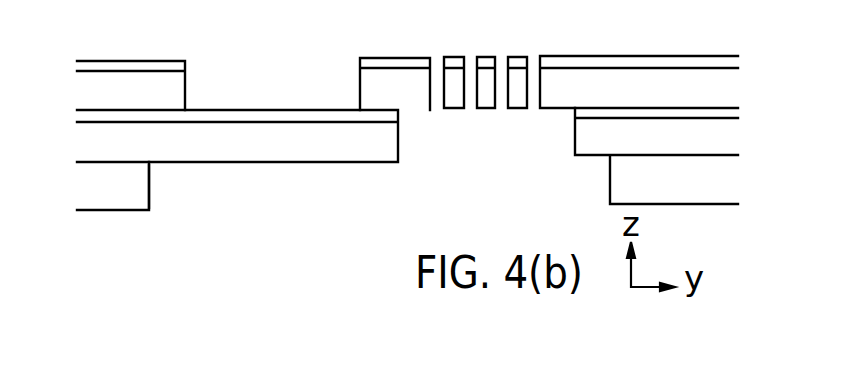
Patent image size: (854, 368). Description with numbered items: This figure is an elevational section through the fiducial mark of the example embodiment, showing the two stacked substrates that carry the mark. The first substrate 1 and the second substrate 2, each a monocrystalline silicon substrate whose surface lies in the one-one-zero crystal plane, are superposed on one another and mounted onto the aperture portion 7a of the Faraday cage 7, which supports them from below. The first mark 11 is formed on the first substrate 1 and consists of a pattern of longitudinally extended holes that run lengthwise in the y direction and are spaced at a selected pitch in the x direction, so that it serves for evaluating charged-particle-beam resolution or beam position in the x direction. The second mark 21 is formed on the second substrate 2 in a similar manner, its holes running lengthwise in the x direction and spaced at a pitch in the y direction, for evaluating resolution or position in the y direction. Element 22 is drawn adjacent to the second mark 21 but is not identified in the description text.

The first substrate 1 is at (305, 145).
The second substrate 2 is at (661, 77).
The Faraday cage 7 is at (93, 198).
The aperture portion 7a is at (150, 189).
The first mark 11 is at (575, 135).
The second mark 21 is at (533, 47).
The block 22 is at (358, 87).